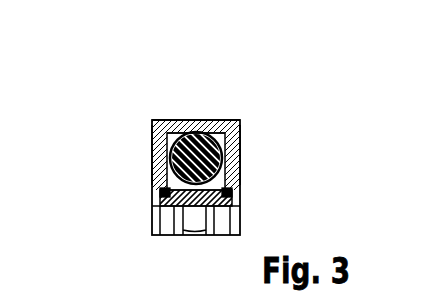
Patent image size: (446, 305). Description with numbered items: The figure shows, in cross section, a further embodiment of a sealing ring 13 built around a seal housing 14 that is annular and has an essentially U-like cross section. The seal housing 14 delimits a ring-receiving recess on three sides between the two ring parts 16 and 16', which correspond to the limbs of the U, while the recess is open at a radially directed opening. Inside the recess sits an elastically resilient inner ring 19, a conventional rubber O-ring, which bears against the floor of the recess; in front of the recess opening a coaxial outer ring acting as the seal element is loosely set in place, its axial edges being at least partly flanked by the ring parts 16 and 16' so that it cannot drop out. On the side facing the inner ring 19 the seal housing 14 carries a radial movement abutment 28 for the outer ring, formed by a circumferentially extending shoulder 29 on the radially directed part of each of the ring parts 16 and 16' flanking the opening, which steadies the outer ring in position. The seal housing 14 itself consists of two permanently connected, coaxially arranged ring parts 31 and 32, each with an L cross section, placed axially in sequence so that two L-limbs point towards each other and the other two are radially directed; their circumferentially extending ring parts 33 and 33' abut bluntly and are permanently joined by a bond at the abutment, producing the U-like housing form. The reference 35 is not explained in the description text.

The sealing ring 13 is at (141, 137).
The seal housing 14 is at (242, 120).
The ring part 16 is at (129, 194).
The ring part 16' is at (270, 187).
The inner ring 19 is at (235, 136).
The radial movement abutment 28 is at (242, 194).
The shoulder 29 is at (214, 236).
The ring part 31 is at (150, 158).
The ring part 32 is at (242, 149).
The ring part 33 is at (179, 89).
The ring part 33' is at (220, 88).
The opening 35 is at (197, 118).